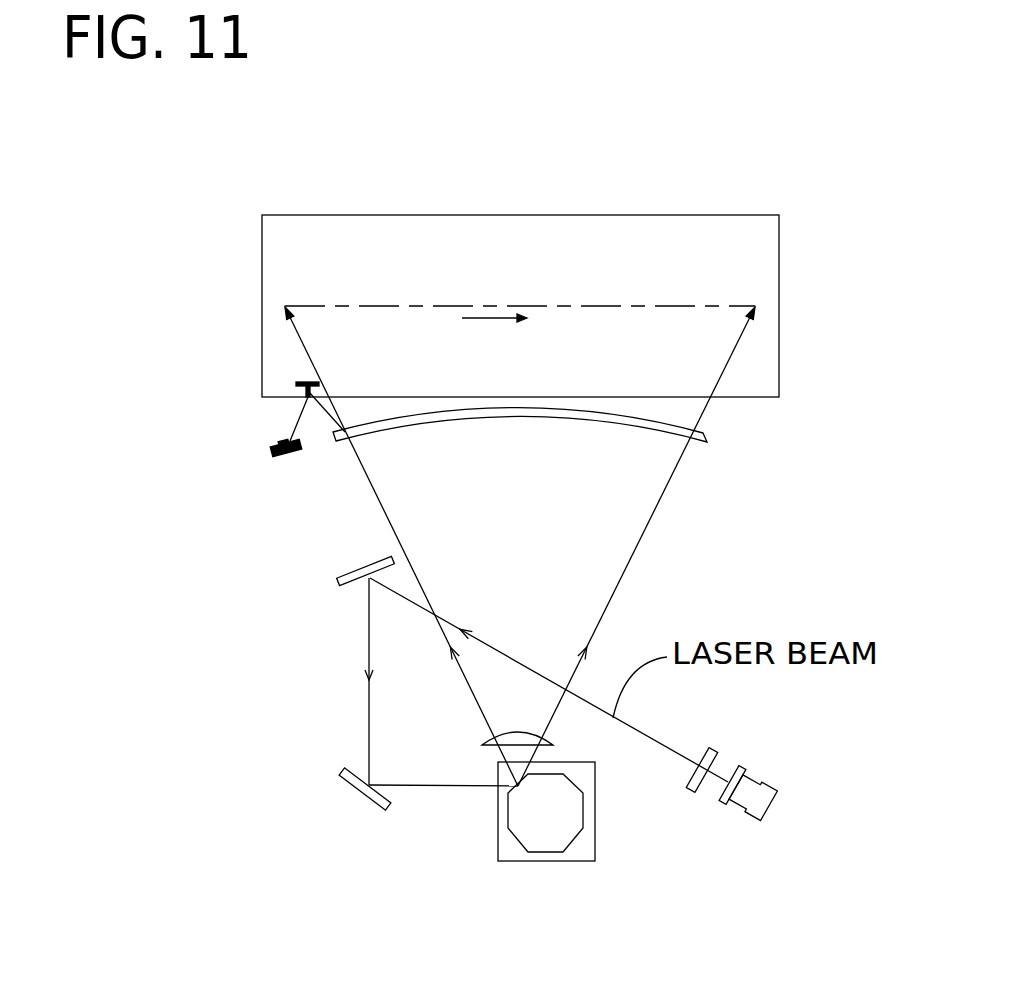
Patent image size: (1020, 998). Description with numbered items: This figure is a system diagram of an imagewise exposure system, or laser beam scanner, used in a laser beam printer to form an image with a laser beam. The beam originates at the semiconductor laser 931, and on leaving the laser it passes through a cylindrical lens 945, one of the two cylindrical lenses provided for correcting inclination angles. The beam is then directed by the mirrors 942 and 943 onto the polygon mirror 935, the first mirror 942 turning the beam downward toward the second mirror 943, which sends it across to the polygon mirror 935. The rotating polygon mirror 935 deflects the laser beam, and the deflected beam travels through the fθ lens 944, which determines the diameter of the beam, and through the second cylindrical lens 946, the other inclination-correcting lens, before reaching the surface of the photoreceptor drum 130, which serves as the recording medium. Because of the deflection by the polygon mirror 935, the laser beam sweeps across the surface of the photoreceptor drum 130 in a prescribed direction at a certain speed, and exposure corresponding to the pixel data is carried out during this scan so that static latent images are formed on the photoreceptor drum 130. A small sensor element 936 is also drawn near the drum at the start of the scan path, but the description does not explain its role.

The photoreceptor drum 130 is at (678, 226).
The cylindrical lens 946 is at (705, 436).
The beam detection sensor 936 is at (284, 456).
The mirror 942 is at (338, 580).
The mirror 943 is at (358, 793).
The fθ lens 944 is at (482, 742).
The polygon mirror 935 is at (588, 828).
The cylindrical lens 945 is at (716, 745).
The semiconductor laser 931 is at (778, 806).